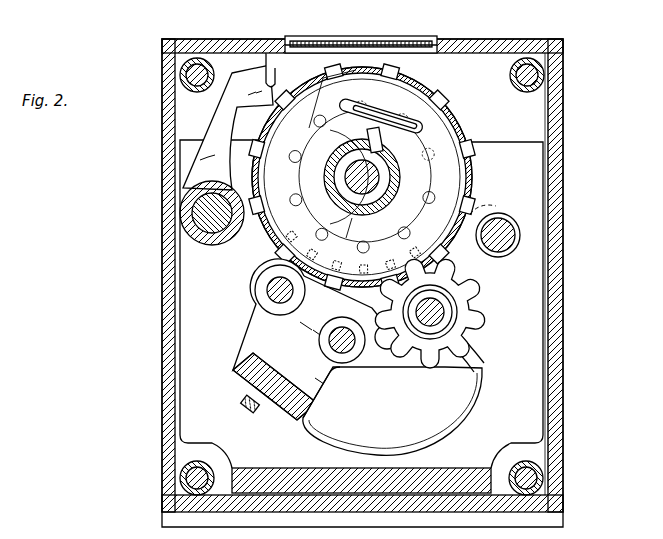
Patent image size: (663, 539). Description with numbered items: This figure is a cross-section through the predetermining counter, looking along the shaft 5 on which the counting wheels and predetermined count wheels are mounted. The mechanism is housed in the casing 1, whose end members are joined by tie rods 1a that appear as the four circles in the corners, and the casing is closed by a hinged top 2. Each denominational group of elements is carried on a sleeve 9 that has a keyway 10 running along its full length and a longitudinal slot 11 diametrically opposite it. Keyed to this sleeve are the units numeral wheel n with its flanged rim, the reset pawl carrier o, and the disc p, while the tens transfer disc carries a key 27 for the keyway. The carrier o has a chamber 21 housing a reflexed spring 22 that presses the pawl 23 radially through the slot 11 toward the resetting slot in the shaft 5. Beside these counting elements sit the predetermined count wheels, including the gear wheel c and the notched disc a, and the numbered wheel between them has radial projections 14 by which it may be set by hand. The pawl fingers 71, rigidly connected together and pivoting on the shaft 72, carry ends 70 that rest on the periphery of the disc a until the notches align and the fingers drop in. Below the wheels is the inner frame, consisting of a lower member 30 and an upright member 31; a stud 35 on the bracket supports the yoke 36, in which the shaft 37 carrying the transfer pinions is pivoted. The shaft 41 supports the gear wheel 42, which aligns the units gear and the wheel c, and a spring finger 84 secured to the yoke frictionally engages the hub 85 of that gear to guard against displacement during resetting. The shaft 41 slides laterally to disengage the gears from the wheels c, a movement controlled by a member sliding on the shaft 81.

The casing 1 is at (552, 118).
The tie rods 1a is at (176, 45).
The hinged top 2 is at (492, 46).
The shaft 5 is at (344, 174).
The sleeve 9 is at (326, 152).
The keyway 10 is at (396, 203).
The longitudinal slot 11 is at (338, 130).
The radial projections 14 is at (470, 176).
The chamber 21 is at (398, 104).
The reflexed spring 22 is at (374, 92).
The pawl 23 is at (381, 144).
The key 27 is at (350, 236).
The lower member 30 is at (274, 468).
The upright member 31 is at (548, 398).
The stud 35 is at (334, 362).
The yoke 36 is at (312, 387).
The shaft 37 is at (278, 316).
The shaft 41 is at (446, 310).
The gear wheel 42 is at (466, 294).
The pawl finger ends 70 is at (268, 60).
The pawl fingers 71 is at (222, 122).
The shaft 72 is at (180, 214).
The shaft 81 is at (520, 235).
The spring fingers 84 is at (443, 428).
The hubs 85 is at (468, 332).
The disc a is at (335, 340).
The gear wheel c is at (490, 205).
The units numeral wheel n is at (372, 83).
The reset pawl carrier o is at (342, 86).
The disc p is at (404, 88).